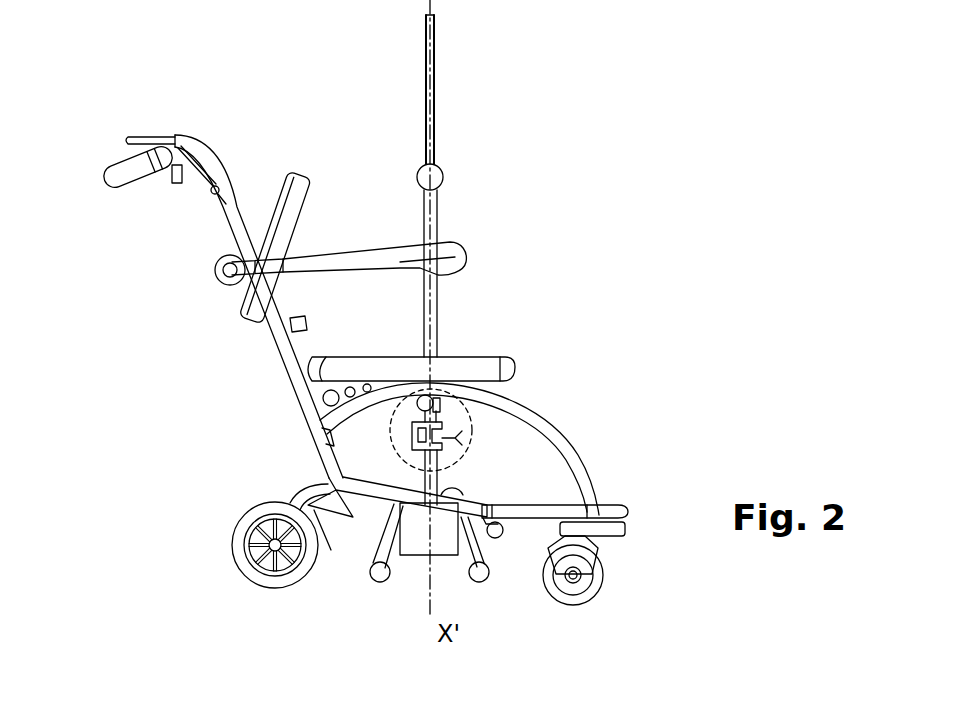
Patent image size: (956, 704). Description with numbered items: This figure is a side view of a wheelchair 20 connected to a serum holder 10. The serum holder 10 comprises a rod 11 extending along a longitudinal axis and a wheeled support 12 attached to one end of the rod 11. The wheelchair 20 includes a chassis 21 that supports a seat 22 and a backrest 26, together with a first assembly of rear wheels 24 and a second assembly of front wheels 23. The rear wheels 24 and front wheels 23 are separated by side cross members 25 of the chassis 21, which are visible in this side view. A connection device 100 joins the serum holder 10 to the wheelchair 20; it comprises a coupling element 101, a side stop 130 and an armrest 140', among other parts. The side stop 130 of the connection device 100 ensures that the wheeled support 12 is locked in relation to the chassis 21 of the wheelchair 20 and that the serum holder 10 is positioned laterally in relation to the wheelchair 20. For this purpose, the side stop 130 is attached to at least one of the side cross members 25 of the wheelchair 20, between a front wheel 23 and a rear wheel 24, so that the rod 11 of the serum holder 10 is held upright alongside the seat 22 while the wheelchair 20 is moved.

The serum holder 10 is at (484, 186).
The rod 11 is at (437, 57).
The wheeled support 12 is at (385, 551).
The wheelchair 20 is at (106, 151).
The chassis 21 is at (515, 397).
The seat 22 is at (469, 357).
The front wheels 23 is at (598, 578).
The rear wheels 24 is at (240, 535).
The side cross members 25 is at (530, 512).
The backrest 26 is at (268, 213).
The connection device 100 is at (476, 443).
The coupling element 101 is at (352, 447).
The side stop 130 is at (413, 545).
The armrest 140' is at (340, 231).